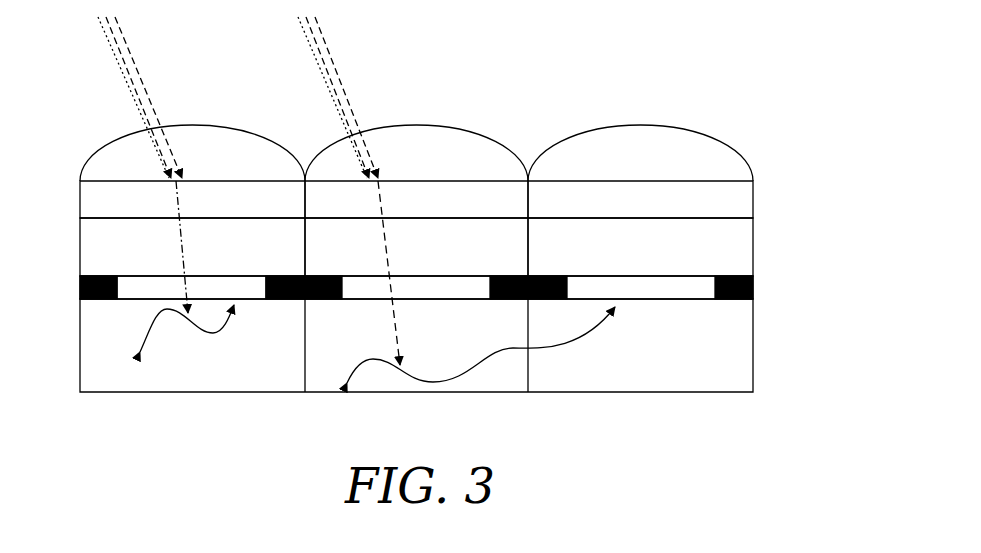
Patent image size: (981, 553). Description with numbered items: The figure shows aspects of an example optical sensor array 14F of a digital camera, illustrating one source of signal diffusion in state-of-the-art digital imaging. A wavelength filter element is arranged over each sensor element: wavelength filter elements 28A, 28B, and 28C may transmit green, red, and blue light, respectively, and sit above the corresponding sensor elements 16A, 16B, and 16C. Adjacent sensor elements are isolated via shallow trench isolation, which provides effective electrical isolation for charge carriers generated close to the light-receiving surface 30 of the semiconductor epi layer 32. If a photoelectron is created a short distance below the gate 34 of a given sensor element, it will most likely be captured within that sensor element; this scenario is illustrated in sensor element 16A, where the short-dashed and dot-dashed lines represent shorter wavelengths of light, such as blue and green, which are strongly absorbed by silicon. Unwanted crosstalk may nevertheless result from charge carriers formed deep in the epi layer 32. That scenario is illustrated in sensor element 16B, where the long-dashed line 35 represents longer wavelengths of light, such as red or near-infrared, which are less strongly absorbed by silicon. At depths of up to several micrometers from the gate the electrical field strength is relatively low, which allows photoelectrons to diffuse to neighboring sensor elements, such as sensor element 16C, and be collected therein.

The optical sensor array 14F is at (823, 166).
The wavelength filter element 28A is at (251, 211).
The wavelength filter element 28B is at (475, 211).
The wavelength filter element 28C is at (695, 211).
The sensor element 16A is at (251, 250).
The sensor element 16B is at (475, 250).
The sensor element 16C is at (695, 250).
The light-receiving surface 30 is at (773, 285).
The semiconductor epi layer 32 is at (773, 347).
The gate 34 is at (148, 278).
The long-dashed line 35 is at (387, 236).